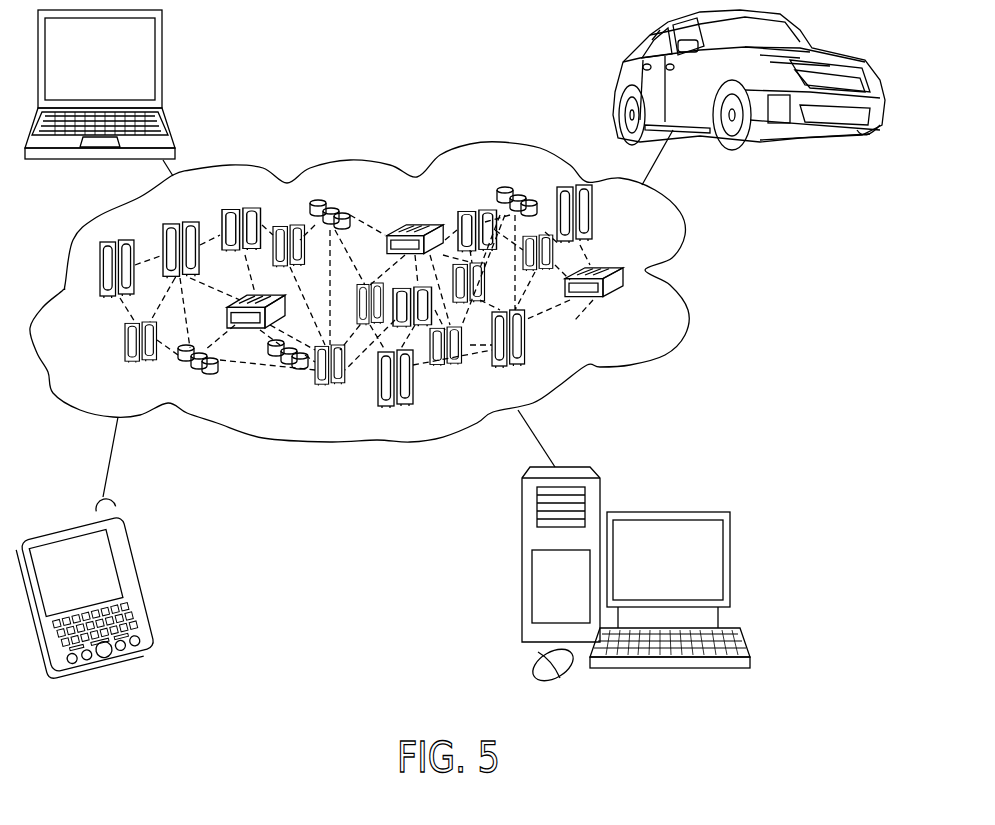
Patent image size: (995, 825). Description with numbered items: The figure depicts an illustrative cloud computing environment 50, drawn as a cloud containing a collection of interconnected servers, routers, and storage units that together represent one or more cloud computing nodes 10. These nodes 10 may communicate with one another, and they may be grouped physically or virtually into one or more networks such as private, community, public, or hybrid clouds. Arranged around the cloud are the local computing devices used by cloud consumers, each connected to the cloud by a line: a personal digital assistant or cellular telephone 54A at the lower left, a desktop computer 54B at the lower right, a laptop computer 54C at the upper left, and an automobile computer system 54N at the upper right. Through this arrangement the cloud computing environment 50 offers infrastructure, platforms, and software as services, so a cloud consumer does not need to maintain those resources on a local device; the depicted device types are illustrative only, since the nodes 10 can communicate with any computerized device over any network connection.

The cloud computing nodes 10 is at (645, 325).
The cloud computing environment 50 is at (685, 227).
The personal digital assistant or cellular telephone 54A is at (135, 560).
The desktop computer 54B is at (732, 558).
The laptop computer 54C is at (162, 63).
The automobile computer system 54N is at (797, 32).